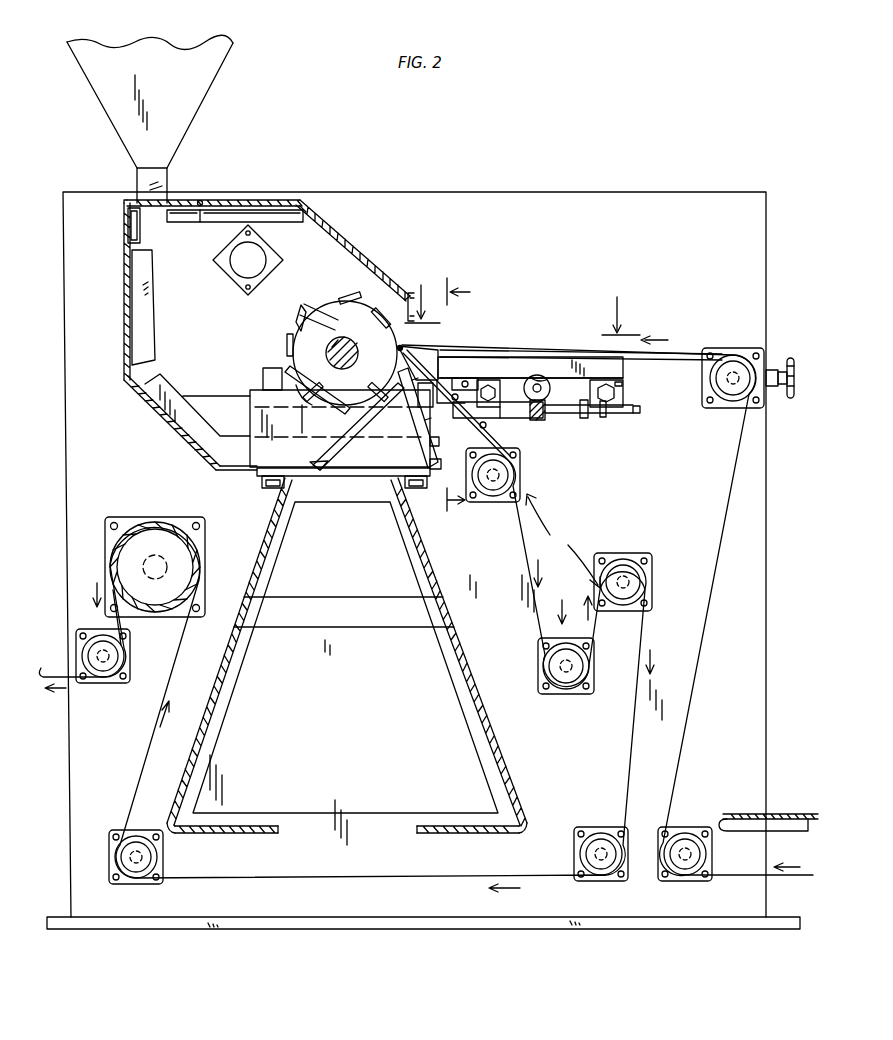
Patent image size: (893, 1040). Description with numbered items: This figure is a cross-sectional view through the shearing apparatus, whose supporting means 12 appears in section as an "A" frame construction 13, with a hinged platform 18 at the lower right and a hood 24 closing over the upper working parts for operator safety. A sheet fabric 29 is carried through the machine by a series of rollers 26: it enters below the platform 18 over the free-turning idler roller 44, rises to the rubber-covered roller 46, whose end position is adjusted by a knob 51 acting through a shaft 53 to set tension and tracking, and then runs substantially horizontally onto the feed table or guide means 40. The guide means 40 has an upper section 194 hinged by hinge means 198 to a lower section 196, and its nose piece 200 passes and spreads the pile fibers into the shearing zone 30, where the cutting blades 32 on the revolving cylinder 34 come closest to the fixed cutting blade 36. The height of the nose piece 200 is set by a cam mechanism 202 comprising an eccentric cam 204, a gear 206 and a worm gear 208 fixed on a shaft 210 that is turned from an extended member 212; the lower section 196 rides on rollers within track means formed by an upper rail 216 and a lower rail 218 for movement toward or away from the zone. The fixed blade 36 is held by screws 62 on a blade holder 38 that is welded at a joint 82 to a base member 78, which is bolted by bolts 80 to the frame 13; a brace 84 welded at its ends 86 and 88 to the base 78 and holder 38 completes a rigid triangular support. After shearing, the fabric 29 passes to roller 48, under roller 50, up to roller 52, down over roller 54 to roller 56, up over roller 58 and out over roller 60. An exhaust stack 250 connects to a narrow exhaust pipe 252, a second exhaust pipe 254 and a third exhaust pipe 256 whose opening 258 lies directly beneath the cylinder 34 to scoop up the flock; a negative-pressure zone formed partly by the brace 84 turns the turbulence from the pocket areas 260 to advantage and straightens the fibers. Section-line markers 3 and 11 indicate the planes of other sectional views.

The exhaust stack 250 is at (190, 126).
The narrow exhaust pipe 252 is at (140, 278).
The second exhaust pipe 254 is at (165, 408).
The third exhaust pipe 256 is at (250, 393).
The opening 258 is at (328, 408).
The pocket areas 260 is at (410, 294).
The hood 24 is at (333, 225).
The shearing zone 30 is at (388, 322).
The cutting blades 32 is at (348, 294).
The revolving cylinder 34 is at (306, 320).
The fixed cutting blade 36 is at (431, 405).
The section line 3- 3 is at (536, 302).
The section line 11- 11 is at (468, 402).
The sheet fabric 29 is at (536, 347).
The upper section 194 is at (561, 356).
The nose piece 200 is at (428, 347).
The eccentrically shaped cam 204 is at (556, 364).
The guide means 40 is at (533, 348).
The upper elongated rail 216 is at (470, 378).
The gear 206 is at (536, 418).
The worm gear 208 is at (548, 402).
The cam mechanism 202 is at (545, 421).
The hinge means 198 is at (623, 394).
The lower section 196 is at (505, 404).
The shaft 210 is at (607, 415).
The extended member 212 is at (641, 413).
The lower elongated rail 218 is at (483, 428).
The brace end 88 is at (404, 428).
The brace 84 is at (336, 466).
The brace end 86 is at (316, 462).
The joint 82 is at (438, 465).
The screws 62 is at (434, 445).
The base member 78 is at (349, 477).
The bolts 80 is at (262, 486).
The blade holder 38 is at (405, 481).
The supporting means 12 is at (466, 749).
The A frame construction 13 is at (296, 617).
The roller 58 is at (138, 545).
The roller 60 is at (80, 652).
The roller 48 is at (513, 481).
The roller 46 is at (738, 360).
The shaft 53 is at (772, 370).
The knob 51 is at (794, 368).
The roller 52 is at (645, 545).
The roller 50 is at (552, 688).
The roller 56 is at (118, 843).
The roller 54 is at (608, 833).
The roller 44 is at (704, 832).
The platform 18 is at (812, 816).
The rollers 26 is at (563, 541).